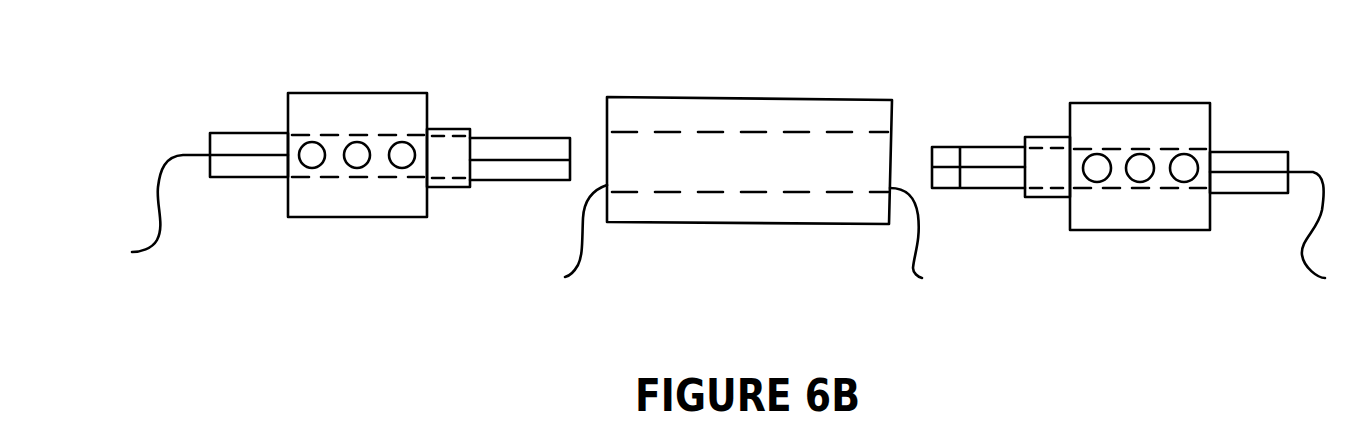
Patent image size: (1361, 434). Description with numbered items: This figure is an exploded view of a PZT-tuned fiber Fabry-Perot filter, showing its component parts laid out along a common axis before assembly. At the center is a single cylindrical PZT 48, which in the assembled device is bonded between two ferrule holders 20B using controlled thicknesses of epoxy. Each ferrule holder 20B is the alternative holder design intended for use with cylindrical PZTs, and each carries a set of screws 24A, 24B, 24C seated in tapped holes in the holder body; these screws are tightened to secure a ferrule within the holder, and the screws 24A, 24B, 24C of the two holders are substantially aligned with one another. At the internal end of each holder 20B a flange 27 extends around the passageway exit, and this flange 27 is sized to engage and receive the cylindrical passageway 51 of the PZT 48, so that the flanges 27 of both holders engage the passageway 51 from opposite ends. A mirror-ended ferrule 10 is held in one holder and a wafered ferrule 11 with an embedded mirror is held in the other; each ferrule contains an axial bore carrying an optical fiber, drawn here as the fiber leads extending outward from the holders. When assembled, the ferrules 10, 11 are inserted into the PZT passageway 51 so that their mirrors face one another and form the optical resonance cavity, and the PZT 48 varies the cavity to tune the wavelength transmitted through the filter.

The ferrule 10 is at (238, 163).
The ferrule 11 is at (1252, 182).
The ferrule holder 20B is at (368, 197).
The screw 24A is at (309, 142).
The screw 24B is at (355, 142).
The screw 24C is at (400, 142).
The flange 27 is at (442, 160).
The cylindrical PZT 48 is at (747, 210).
The passageway 51 is at (744, 239).